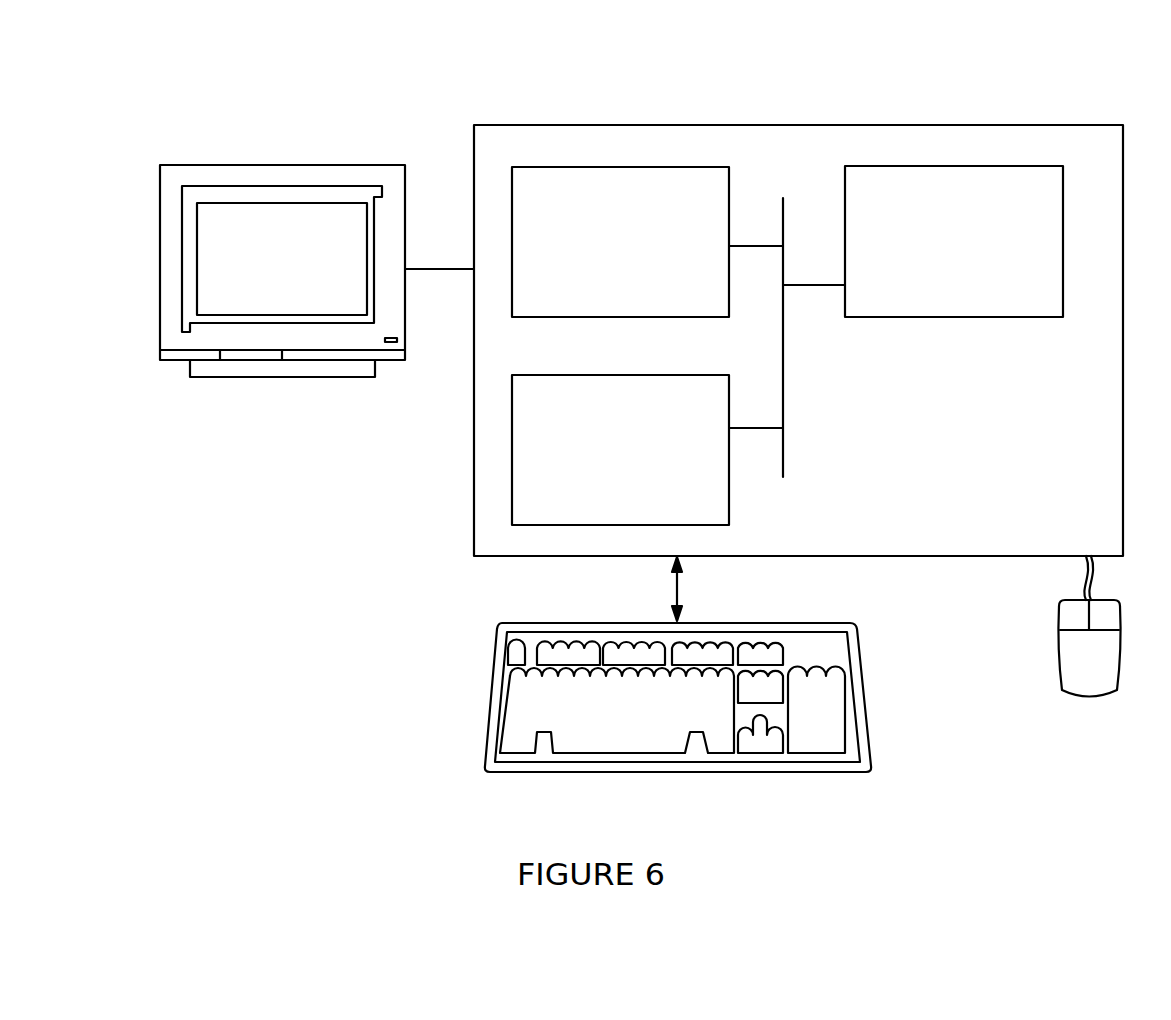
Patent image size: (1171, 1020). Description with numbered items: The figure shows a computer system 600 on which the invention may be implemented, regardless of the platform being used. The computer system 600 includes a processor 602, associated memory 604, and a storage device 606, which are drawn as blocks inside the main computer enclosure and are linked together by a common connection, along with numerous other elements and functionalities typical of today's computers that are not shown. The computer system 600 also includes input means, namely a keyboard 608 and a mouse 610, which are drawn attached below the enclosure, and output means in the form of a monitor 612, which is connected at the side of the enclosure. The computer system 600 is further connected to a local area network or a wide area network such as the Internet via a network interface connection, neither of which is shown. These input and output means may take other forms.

The computer system 600 is at (836, 76).
The processor 602 is at (961, 254).
The memory 604 is at (641, 254).
The storage device 606 is at (637, 462).
The keyboard 608 is at (637, 722).
The mouse 610 is at (1109, 670).
The monitor 612 is at (299, 277).